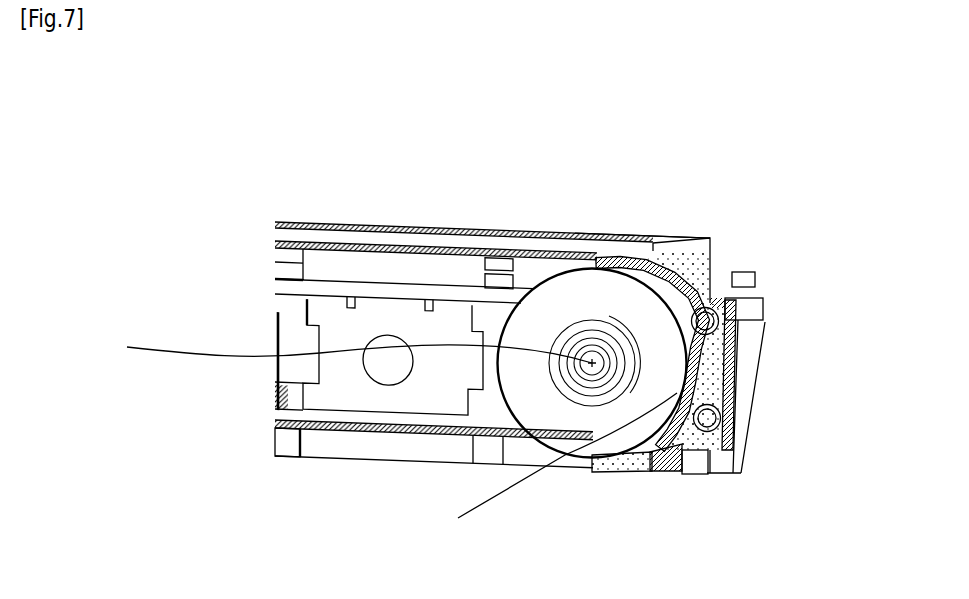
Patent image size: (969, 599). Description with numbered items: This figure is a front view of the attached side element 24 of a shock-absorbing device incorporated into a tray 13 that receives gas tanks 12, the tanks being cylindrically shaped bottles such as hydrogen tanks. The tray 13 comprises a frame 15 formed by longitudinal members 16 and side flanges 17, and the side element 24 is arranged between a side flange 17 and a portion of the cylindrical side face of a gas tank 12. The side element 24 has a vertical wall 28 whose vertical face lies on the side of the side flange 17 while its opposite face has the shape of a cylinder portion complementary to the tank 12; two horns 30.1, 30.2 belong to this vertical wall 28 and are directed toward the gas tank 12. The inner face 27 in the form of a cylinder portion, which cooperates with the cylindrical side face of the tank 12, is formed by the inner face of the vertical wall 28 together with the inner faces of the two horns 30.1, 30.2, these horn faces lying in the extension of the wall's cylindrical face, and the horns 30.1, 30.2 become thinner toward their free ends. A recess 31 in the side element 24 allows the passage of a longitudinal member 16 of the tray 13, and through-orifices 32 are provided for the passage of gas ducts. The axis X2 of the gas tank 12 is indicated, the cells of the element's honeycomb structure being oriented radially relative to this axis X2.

The gas tank 12 is at (535, 305).
The tray 13 is at (296, 218).
The frame 15 is at (688, 228).
The longitudinal member 16 is at (277, 446).
The side flange 17 is at (755, 333).
The attached side element 24 is at (712, 262).
The inner face 27 is at (549, 466).
The vertical wall 28 is at (757, 353).
The horn 30.1 is at (642, 247).
The horn 30.2 is at (663, 461).
The recess 31 is at (740, 467).
The gas duct passage orifice 32 is at (760, 283).
The axis of the gas tank X2 is at (342, 347).